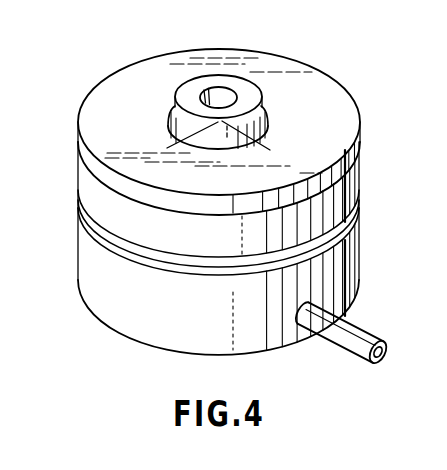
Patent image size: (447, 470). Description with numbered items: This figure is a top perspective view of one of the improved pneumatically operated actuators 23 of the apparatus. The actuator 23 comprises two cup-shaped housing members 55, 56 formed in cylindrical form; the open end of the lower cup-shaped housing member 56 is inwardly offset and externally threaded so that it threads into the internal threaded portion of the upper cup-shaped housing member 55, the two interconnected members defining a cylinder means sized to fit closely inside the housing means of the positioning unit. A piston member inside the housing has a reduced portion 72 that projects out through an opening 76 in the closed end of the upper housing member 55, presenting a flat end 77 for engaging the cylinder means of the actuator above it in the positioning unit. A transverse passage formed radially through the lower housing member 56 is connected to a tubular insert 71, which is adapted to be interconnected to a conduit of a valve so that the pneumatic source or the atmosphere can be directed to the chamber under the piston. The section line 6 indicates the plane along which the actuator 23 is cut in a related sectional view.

The actuator 23 is at (350, 76).
The flat end 77 is at (233, 83).
The reduced portion 72 is at (176, 111).
The opening 76 is at (267, 123).
The cup-shaped housing member 55 is at (353, 184).
The cup-shaped housing member 56 is at (338, 271).
The tubular insert 71 is at (356, 333).
The section line 6- 6 is at (76, 224).